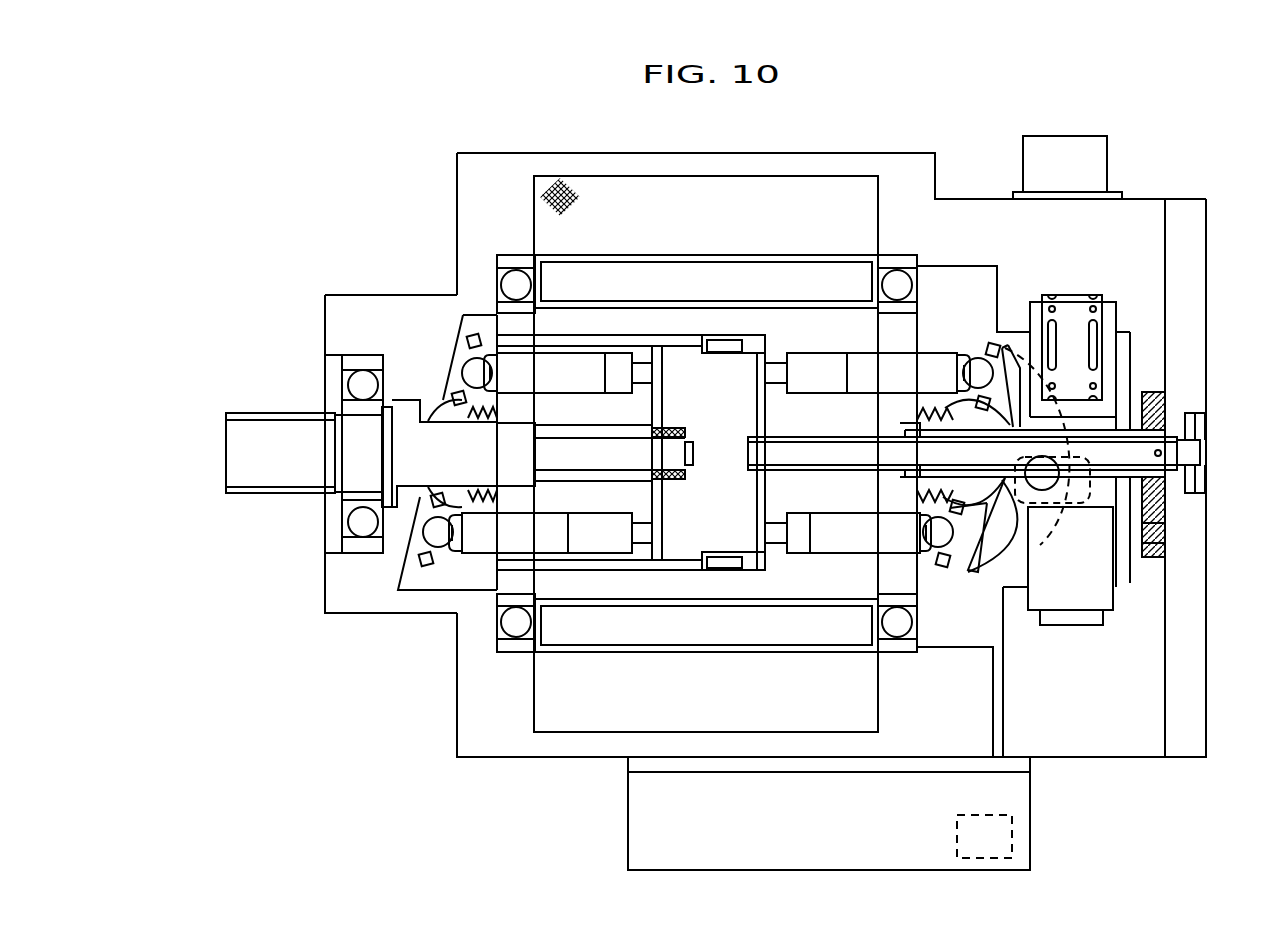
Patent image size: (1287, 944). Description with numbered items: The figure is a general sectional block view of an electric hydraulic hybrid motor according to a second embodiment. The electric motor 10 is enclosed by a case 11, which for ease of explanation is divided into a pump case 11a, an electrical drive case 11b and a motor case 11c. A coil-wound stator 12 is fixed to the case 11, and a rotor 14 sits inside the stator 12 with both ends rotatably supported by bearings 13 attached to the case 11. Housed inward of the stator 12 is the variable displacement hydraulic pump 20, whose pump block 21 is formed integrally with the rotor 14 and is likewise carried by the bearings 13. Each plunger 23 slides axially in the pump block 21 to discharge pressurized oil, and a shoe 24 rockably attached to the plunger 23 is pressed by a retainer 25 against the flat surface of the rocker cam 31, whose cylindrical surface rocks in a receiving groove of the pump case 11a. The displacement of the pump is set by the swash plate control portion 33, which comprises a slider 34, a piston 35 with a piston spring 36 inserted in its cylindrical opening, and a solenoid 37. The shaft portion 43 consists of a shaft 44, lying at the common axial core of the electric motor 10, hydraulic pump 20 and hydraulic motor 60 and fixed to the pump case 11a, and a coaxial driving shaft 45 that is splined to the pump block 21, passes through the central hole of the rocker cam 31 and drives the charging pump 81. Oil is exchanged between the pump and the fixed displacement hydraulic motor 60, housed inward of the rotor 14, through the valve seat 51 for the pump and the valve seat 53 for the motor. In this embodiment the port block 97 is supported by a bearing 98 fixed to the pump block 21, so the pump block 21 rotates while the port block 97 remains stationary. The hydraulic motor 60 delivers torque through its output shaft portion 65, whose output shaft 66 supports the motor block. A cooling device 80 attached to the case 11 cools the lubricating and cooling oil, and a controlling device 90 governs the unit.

The electric motor 10 is at (744, 130).
The case 11 is at (613, 158).
The pump case 11a is at (1140, 757).
The electrical drive case 11b is at (791, 165).
The motor case 11c is at (350, 607).
The stator 12 is at (658, 185).
The bearings 13 is at (898, 268).
The rotor 14 is at (636, 270).
The variable displacement hydraulic pump 20 is at (988, 330).
The pump block 21 is at (795, 283).
The plunger 23 is at (823, 540).
The shoe 24 is at (922, 560).
The retainer 25 is at (947, 562).
The rocker cam 31 is at (1003, 553).
The swash plate control portion 33 is at (1123, 290).
The slider 34 is at (1050, 523).
The piston 35 is at (1105, 330).
The piston spring 36 is at (1097, 309).
The solenoid 37 is at (1057, 158).
The shaft portion 43 is at (1200, 432).
The shaft 44 is at (1187, 457).
The driving shaft 45 is at (1163, 507).
The valve seat for the hydraulic pump 51 is at (758, 558).
The valve seat for the hydraulic motor 53 is at (655, 558).
The fixed displacement hydraulic motor 60 is at (421, 303).
The output shaft portion 65 is at (272, 395).
The output shaft 66 is at (230, 452).
The cooling device 80 is at (923, 877).
The charging pump 81 is at (1163, 550).
The controlling device 90 is at (1012, 835).
The port block 97 is at (682, 552).
The bearing 98 is at (718, 562).